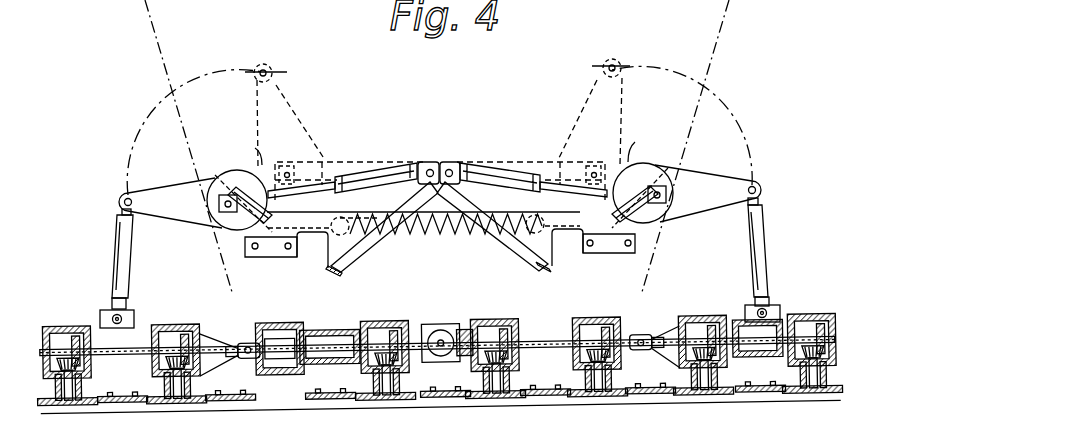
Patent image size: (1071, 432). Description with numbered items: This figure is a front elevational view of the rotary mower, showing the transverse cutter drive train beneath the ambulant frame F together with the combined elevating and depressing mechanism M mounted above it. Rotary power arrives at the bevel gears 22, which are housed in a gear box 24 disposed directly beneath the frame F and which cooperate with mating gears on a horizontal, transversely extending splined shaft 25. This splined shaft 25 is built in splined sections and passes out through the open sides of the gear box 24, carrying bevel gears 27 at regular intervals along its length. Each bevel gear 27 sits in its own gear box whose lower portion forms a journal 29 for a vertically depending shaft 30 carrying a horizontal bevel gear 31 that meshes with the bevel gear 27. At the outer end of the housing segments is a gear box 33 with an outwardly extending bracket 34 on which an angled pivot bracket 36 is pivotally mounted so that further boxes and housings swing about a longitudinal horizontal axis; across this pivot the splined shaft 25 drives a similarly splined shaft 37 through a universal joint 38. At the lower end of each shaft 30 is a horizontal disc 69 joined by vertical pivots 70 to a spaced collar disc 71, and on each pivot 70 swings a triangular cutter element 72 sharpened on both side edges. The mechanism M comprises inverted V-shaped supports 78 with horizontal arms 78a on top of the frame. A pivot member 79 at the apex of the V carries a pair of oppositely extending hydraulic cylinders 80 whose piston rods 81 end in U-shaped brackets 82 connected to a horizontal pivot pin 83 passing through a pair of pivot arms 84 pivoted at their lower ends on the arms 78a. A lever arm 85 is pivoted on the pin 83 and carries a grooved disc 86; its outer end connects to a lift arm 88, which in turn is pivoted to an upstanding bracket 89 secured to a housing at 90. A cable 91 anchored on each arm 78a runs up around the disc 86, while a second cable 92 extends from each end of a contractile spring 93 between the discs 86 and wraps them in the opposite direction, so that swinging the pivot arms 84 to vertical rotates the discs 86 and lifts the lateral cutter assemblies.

The bevel gears 22 is at (446, 330).
The gear box 24 is at (448, 362).
The splined shaft 25 is at (336, 333).
The bevel gears 27 is at (74, 335).
The journal 29 is at (232, 395).
The vertical shaft 30 is at (150, 383).
The bevel gear 31 is at (431, 336).
The gear box 33 is at (290, 322).
The bracket 34 is at (252, 338).
The angled pivot bracket 36 is at (215, 358).
The splined shaft 37 is at (203, 338).
The universal joint 38 is at (244, 340).
The horizontal disc 69 is at (254, 398).
The pivots 70 is at (305, 396).
The collar disc 71 is at (200, 395).
The cutter element 72 is at (134, 403).
The inverted V-shaped supports 78 is at (415, 197).
The horizontal arms 78a is at (252, 262).
The pivot member 79 is at (439, 160).
The hydraulic cylinders 80 is at (392, 168).
The piston rod 81 is at (312, 200).
The U-shaped bracket 82 is at (252, 180).
The pivot pin 83 is at (218, 206).
The pivot arms 84 is at (240, 226).
The lever arm 85 is at (172, 192).
The disc 86 is at (226, 180).
The lift arm 88 is at (124, 244).
The upstanding bracket 89 is at (110, 310).
The pivot point 90 is at (136, 315).
The cable 91 is at (446, 143).
The second cable 92 is at (440, 248).
The contractile spring 93 is at (432, 236).
The elevating and depressing mechanism M is at (376, 163).
The ambulant frame F is at (550, 264).